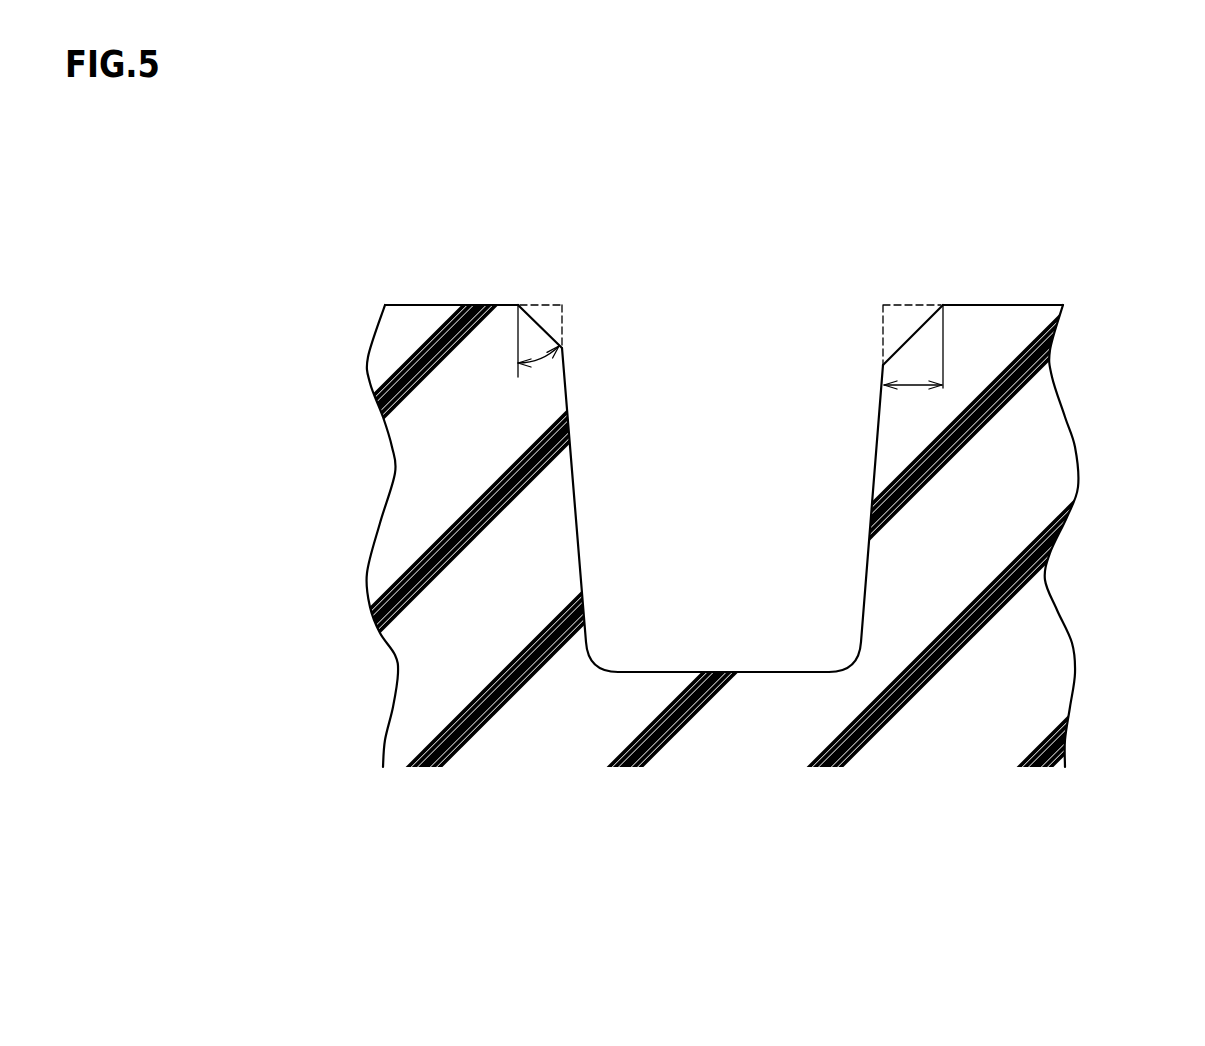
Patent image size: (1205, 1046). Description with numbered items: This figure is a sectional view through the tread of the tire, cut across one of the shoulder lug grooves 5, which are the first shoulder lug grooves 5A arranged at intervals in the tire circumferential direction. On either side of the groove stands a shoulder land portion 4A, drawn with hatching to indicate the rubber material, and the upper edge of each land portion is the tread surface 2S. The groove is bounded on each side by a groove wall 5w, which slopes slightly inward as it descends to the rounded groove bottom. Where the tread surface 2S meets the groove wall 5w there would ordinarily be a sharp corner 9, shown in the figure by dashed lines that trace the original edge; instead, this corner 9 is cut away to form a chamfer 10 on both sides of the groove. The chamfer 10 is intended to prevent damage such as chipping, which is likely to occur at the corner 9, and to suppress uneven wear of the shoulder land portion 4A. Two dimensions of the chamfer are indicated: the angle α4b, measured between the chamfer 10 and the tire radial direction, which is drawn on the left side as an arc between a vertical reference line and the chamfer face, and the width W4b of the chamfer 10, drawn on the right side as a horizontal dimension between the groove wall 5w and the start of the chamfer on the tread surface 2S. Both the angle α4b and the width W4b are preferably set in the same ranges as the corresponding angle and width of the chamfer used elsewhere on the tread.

The shoulder land portion 4A is at (602, 480).
The tread surface 2S is at (445, 303).
The shoulder lug grooves 5 is at (723, 434).
The first shoulder lug grooves 5A is at (723, 510).
The groove wall 5w is at (577, 466).
The corner 9 is at (563, 304).
The chamfer 10 is at (543, 330).
The angle of the chamfer 4b is at (628, 335).
The width of the chamfer W4b is at (915, 387).